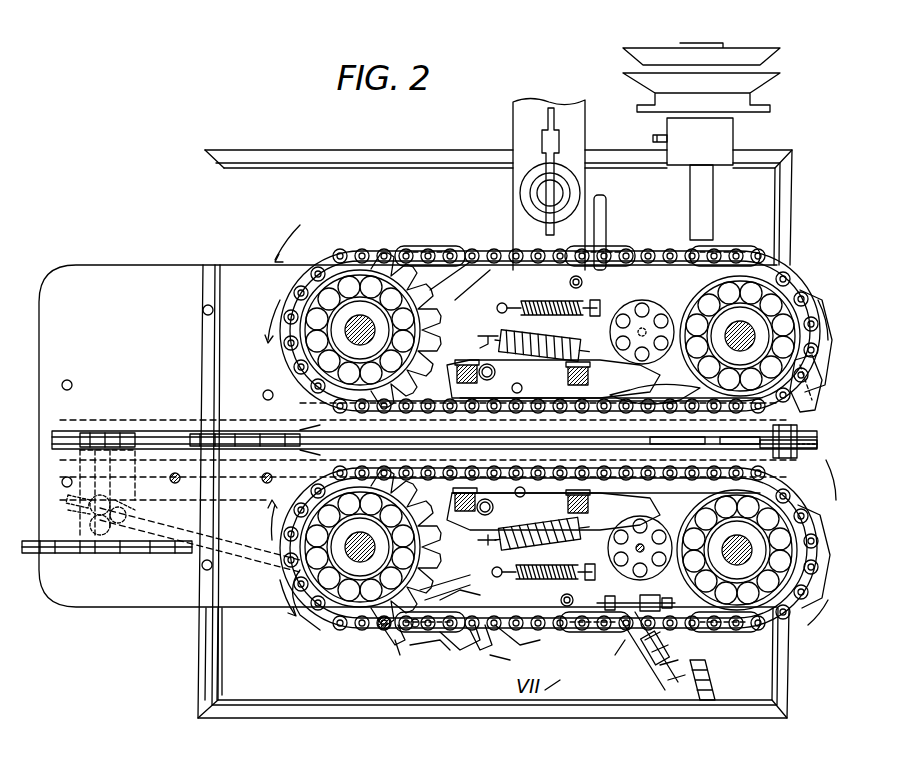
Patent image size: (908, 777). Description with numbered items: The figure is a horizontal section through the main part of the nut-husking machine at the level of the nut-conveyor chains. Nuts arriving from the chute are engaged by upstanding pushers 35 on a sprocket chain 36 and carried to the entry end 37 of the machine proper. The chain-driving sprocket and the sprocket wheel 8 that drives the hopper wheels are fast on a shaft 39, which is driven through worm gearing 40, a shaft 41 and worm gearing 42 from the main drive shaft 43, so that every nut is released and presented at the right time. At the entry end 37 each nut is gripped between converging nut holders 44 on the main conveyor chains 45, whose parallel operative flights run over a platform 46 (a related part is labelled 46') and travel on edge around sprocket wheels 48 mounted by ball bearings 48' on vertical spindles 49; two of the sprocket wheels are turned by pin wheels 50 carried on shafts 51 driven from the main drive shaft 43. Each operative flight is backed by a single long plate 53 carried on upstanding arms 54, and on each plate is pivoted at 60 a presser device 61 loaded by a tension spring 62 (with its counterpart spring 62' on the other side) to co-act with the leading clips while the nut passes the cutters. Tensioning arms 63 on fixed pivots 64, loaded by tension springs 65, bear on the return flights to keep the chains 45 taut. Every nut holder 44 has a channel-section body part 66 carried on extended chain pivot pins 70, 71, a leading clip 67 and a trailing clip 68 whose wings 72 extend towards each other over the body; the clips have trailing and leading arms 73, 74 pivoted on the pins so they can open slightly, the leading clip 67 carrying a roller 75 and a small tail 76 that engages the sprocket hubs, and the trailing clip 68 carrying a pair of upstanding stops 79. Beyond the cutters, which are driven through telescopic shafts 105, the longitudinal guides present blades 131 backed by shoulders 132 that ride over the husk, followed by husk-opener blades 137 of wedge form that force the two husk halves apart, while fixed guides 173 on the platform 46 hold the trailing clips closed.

The sprocket wheel 8 is at (55, 555).
The upstanding pusher 35 is at (205, 432).
The sprocket chain 36 is at (118, 432).
The entry end 37 is at (312, 428).
The shaft 39 is at (82, 432).
The worm gearing 40 is at (80, 518).
The shaft 41 is at (240, 555).
The worm gearing 42 is at (700, 660).
The main drive shaft 43 is at (714, 198).
The nut holder 44 is at (430, 240).
The main conveyor chain 45 is at (360, 240).
The platform 46 is at (408, 418).
The guide line 46' is at (430, 440).
The sprocket wheel 48 is at (562, 408).
The ball bearing 48' is at (640, 264).
The vertical spindle 49 is at (345, 330).
The pin wheel 50 is at (645, 320).
The shaft 51 is at (640, 330).
The long plate 53 is at (518, 394).
The upstanding arm 54 is at (462, 362).
The pivot 60 is at (488, 380).
The presser device 61 is at (635, 402).
The tension spring 62 is at (534, 337).
The spring 62' is at (534, 539).
The tensioning arm 63 is at (530, 275).
The fixed pivot 64 is at (583, 282).
The tension spring 65 is at (510, 300).
The body part 66 is at (462, 645).
The leading clip 67 is at (380, 630).
The trailing clip 68 is at (460, 615).
The pivot pin 70 is at (415, 630).
The pivot pin 71 is at (492, 635).
The wing 72 is at (395, 645).
The trailing arm 73 is at (400, 655).
The leading arm 74 is at (445, 580).
The roller 75 is at (380, 635).
The small tail 76 is at (432, 645).
The upstanding stop 79 is at (492, 655).
The telescopic shaft 105 is at (606, 200).
The blade 131 is at (797, 430).
The shoulder 132 is at (672, 437).
The shouldered blade 137 is at (818, 443).
The fixed guide 173 is at (815, 395).